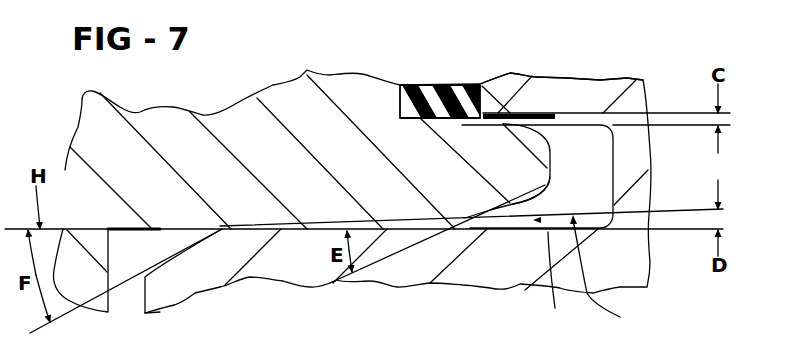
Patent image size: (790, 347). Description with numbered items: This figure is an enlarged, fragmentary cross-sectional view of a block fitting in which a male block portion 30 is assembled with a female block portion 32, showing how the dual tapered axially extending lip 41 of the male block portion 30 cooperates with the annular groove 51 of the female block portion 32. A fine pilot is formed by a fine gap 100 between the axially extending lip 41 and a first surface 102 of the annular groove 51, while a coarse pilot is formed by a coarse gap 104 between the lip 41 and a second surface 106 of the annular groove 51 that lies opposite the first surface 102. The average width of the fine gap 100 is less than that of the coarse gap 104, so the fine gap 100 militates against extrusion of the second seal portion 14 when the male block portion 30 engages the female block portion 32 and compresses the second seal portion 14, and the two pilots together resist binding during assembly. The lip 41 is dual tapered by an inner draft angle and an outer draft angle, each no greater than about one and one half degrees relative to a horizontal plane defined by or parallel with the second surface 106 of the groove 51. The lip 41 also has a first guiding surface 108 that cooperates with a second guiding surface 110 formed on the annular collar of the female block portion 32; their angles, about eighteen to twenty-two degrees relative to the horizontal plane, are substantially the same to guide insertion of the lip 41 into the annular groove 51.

The second seal portion 14 is at (423, 93).
The male block portion 30 is at (284, 103).
The female block portion 32 is at (613, 90).
The axially extending lip 41 is at (507, 171).
The annular groove 51 is at (537, 176).
The fine gap 100 is at (587, 113).
The first surface of the annular groove 102 is at (513, 113).
The coarse gap 104 is at (557, 276).
The second surface of the annular groove 106 is at (614, 275).
The first guiding surface 108 is at (538, 204).
The second guiding surface 110 is at (163, 229).